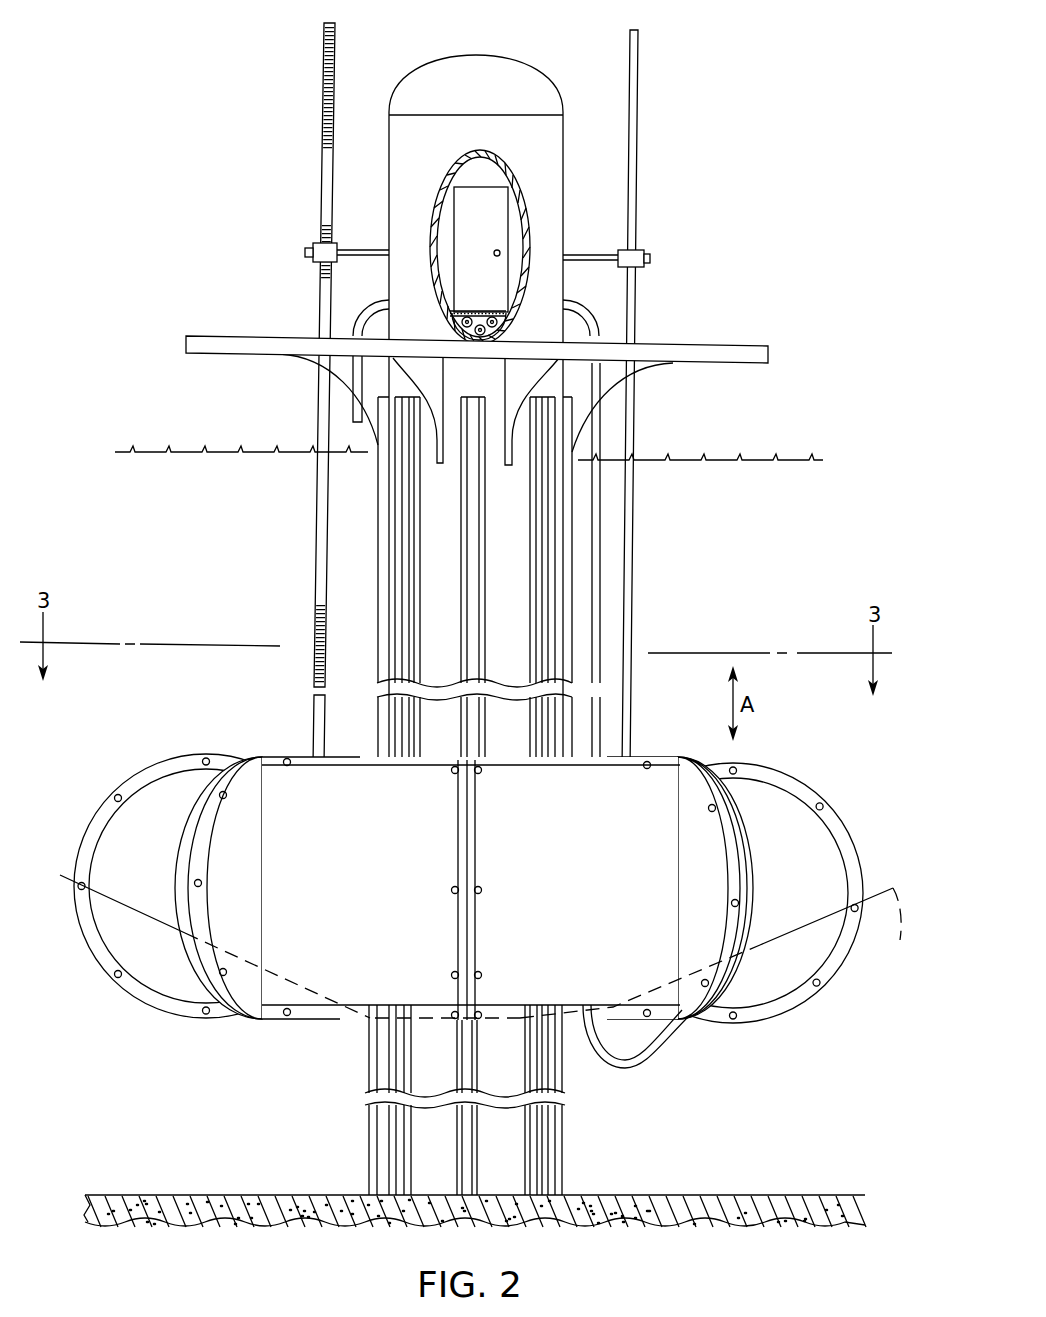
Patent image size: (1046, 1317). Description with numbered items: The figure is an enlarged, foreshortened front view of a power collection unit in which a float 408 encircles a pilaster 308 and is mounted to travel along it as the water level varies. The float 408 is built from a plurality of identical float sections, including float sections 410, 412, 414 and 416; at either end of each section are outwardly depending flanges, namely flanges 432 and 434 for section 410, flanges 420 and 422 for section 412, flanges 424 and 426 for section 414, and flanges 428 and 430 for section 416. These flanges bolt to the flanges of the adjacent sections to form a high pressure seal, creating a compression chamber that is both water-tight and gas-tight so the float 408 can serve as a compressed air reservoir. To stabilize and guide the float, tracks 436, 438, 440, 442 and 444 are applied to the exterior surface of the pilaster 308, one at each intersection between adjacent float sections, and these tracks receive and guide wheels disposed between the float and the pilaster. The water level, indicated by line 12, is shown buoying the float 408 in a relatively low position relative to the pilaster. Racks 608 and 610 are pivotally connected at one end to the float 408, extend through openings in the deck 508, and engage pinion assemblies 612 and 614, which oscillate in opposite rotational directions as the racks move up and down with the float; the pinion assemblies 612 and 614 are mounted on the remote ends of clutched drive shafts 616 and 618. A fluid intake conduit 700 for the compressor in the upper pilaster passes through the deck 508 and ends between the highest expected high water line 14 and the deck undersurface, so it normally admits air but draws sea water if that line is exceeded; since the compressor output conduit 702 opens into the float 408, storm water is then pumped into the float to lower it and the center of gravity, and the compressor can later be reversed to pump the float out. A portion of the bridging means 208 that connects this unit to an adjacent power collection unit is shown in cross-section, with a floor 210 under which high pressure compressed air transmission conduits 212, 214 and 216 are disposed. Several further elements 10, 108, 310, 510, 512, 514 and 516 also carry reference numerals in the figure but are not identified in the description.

The sea floor 10 is at (270, 1195).
The water level line 12 is at (490, 946).
The highest expected high water line 14 is at (185, 450).
The tower assembly 108 is at (697, 267).
The bridging means 208 is at (503, 165).
The floor 210 is at (498, 315).
The high pressure compressed air transmission conduit 212 is at (458, 318).
The high pressure compressed air transmission conduit 214 is at (465, 328).
The high pressure compressed air transmission conduit 216 is at (497, 328).
The pilaster 308 is at (425, 1130).
The housing 310 is at (450, 60).
The float 408 is at (793, 757).
The float section 410 is at (135, 800).
The float section 412 is at (295, 978).
The float section 414 is at (585, 1045).
The float section 416 is at (782, 987).
The outwardly depending flange 420 is at (242, 993).
The outwardly depending flange 422 is at (457, 960).
The outwardly depending flange 424 is at (477, 960).
The outwardly depending flange 426 is at (682, 1005).
The outwardly depending flange 428 is at (732, 968).
The outwardly depending flange 430 is at (838, 968).
The outwardly depending flange 432 is at (197, 968).
The outwardly depending flange 434 is at (200, 757).
The track 436 is at (378, 532).
The track 438 is at (400, 585).
The track 440 is at (470, 480).
The track 442 is at (543, 567).
The track 444 is at (565, 570).
The deck 508 is at (650, 348).
The brace 510 is at (643, 370).
The funnel 512 is at (504, 388).
The funnel 514 is at (432, 371).
The brace 516 is at (300, 360).
The rack 608 is at (628, 605).
The rack 610 is at (318, 488).
The pinion assembly 612 is at (646, 250).
The pinion assembly 614 is at (313, 246).
The clutched drive shaft 616 is at (578, 255).
The clutched drive shaft 618 is at (381, 250).
The fluid intake conduit 700 is at (363, 327).
The output conduit 702 is at (596, 520).